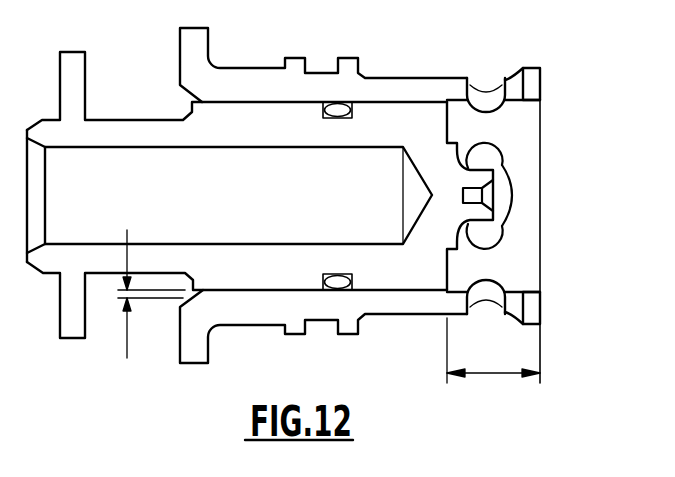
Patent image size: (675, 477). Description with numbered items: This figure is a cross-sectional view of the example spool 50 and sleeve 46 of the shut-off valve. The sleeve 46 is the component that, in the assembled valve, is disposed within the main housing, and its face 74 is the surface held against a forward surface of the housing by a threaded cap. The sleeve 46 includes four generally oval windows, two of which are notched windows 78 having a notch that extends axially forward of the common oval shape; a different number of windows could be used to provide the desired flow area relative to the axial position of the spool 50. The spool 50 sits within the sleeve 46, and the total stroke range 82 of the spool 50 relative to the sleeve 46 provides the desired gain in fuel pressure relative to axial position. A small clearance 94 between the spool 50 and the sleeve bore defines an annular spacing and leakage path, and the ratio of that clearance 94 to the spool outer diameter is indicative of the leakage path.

The spool 50 is at (233, 127).
The sleeve 46 is at (393, 305).
The face 74 is at (558, 83).
The notched window 78 is at (506, 167).
The total stroke range 82 is at (490, 374).
The clearance 94 is at (127, 345).